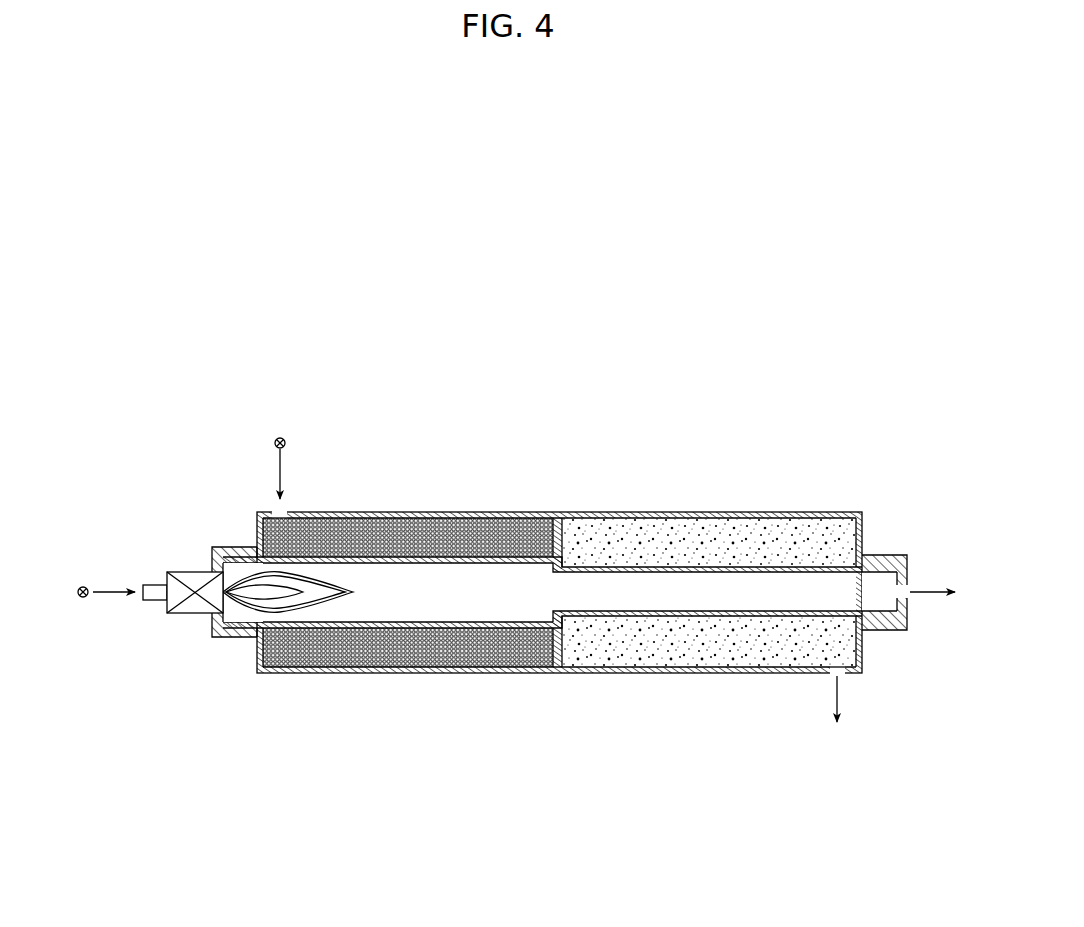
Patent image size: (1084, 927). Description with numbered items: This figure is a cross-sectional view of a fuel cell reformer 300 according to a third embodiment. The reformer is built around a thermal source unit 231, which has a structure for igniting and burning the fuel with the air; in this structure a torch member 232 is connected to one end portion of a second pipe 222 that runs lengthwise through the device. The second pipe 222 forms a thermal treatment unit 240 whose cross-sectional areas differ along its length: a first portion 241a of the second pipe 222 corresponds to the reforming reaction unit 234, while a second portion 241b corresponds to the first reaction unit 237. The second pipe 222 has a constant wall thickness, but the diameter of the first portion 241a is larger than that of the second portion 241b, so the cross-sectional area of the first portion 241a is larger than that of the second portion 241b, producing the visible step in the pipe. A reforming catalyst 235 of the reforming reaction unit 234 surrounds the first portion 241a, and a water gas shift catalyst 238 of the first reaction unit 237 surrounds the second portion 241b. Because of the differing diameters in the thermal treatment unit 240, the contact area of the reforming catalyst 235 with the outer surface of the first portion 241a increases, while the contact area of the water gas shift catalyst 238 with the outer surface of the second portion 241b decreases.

The fuel cell reformer 300 is at (622, 430).
The second pipe 222 is at (554, 543).
The first portion 241a is at (513, 556).
The second portion 241b is at (586, 564).
The thermal source unit 231 is at (158, 624).
The torch member 232 is at (182, 572).
The reforming reaction unit 234 is at (400, 697).
The reforming catalyst 235 is at (373, 530).
The first reaction unit 237 is at (693, 697).
The water gas shift catalyst 238 is at (745, 530).
The thermal treatment unit 240 is at (552, 576).